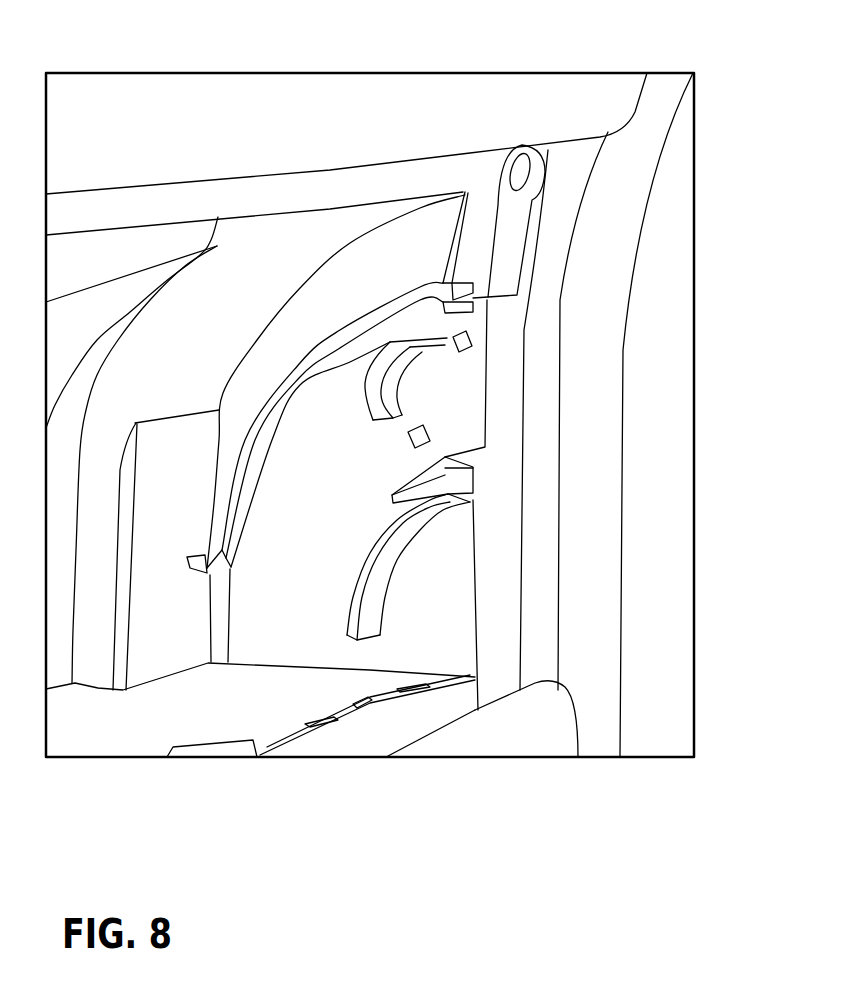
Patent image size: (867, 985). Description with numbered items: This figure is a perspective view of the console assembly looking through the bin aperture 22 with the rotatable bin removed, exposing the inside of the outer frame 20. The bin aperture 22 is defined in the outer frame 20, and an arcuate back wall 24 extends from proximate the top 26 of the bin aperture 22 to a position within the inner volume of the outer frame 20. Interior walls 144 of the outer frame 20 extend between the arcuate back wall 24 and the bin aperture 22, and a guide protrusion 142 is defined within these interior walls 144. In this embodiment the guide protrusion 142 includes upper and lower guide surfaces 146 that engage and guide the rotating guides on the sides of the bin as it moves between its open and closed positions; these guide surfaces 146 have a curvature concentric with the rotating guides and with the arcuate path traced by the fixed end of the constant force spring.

The outer frame 20 is at (720, 432).
The bin aperture 22 is at (522, 583).
The arcuate back wall 24 is at (143, 358).
The top 26 is at (446, 192).
The guide protrusion 142 is at (347, 358).
The interior walls 144 is at (402, 257).
The upper and lower guide surfaces 146 is at (216, 560).